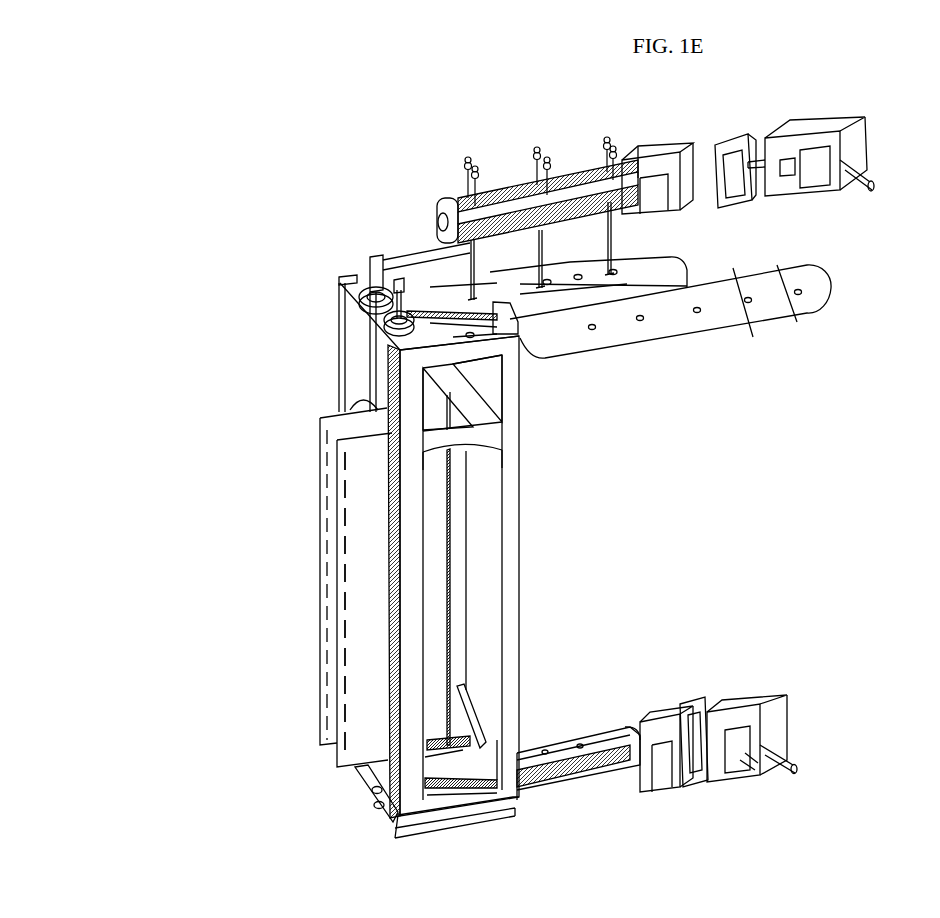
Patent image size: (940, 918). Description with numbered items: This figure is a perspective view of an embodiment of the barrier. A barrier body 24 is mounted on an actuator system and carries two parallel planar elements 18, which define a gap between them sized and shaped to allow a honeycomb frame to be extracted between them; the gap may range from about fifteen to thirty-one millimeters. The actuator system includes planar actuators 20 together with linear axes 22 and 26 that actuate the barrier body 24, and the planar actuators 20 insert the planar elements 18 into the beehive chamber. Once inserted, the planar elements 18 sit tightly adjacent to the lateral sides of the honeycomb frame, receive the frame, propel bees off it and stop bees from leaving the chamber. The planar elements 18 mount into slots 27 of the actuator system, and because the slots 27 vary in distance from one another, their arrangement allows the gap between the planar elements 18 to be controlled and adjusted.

The parallel planar elements 18 is at (310, 538).
The planar actuators 20 is at (820, 155).
The linear axis 22 is at (603, 773).
The barrier body 24 is at (530, 508).
The linear axis 26 is at (603, 205).
The slots 27 is at (355, 265).